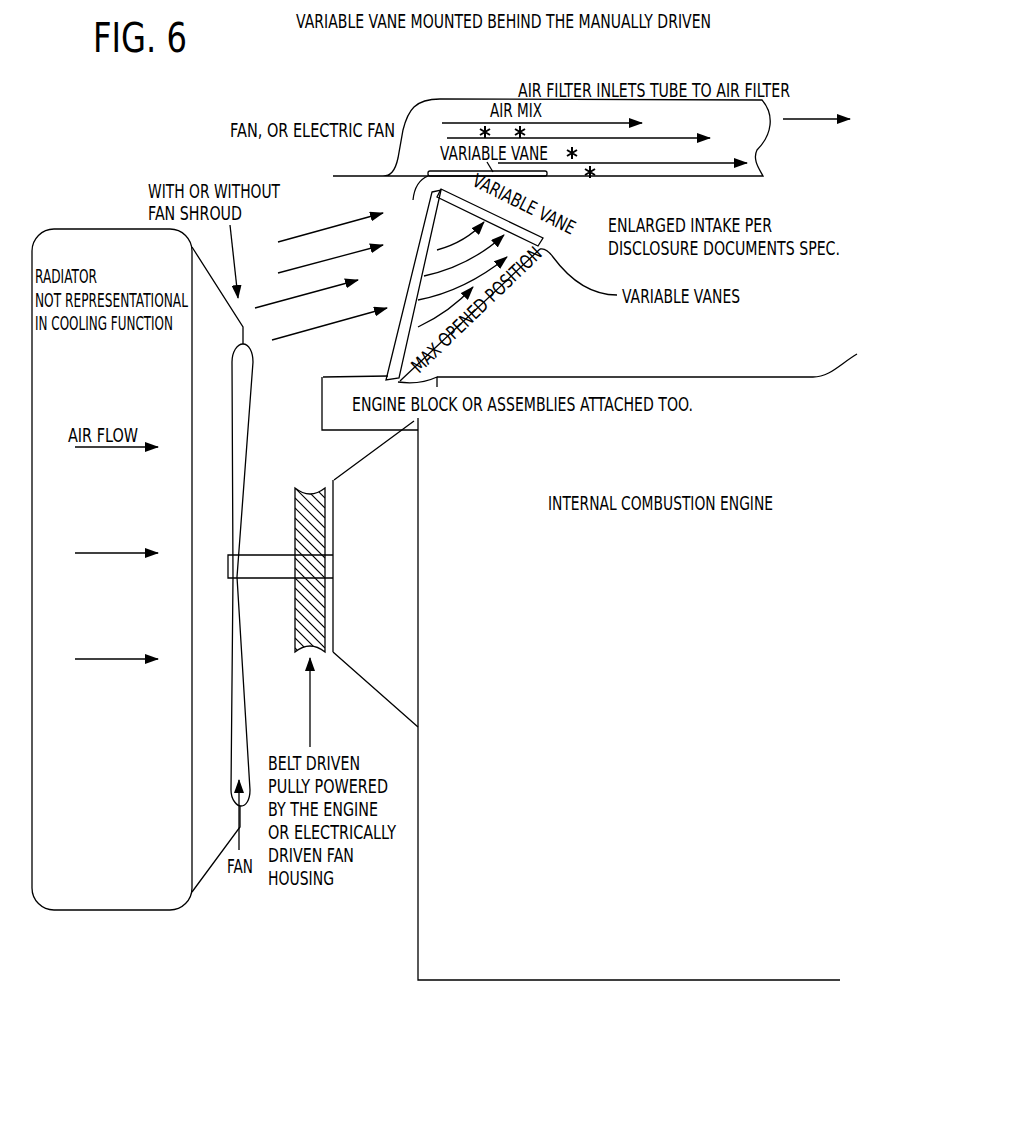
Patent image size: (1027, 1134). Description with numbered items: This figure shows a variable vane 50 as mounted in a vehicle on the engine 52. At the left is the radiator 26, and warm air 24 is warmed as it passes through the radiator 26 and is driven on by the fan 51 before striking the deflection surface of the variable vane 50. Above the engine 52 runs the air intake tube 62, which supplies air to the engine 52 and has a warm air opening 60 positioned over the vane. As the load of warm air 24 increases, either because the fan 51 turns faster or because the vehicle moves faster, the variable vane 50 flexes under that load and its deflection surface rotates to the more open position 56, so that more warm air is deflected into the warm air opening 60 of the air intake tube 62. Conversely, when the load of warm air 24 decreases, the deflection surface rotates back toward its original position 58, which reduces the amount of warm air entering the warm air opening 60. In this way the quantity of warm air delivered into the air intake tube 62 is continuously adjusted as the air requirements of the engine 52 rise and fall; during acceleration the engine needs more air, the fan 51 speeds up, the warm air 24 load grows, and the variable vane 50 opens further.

The warm air 24 is at (303, 233).
The radiator 26 is at (97, 898).
The variable vane 50 is at (357, 380).
The fan 51 is at (240, 720).
The engine 52 is at (515, 650).
The more open position 56 is at (547, 247).
The original position 58 is at (413, 285).
The warm air opening 60 is at (495, 173).
The air intake tube 62 is at (440, 105).